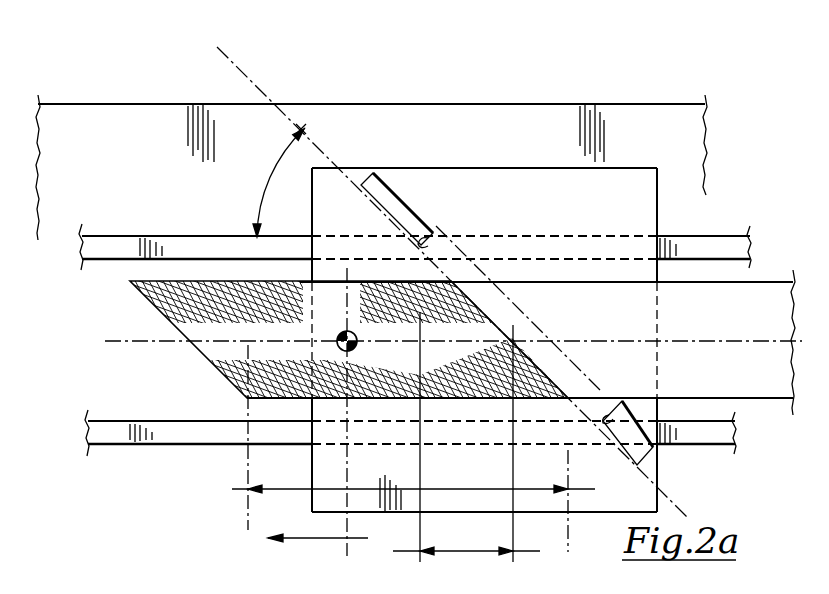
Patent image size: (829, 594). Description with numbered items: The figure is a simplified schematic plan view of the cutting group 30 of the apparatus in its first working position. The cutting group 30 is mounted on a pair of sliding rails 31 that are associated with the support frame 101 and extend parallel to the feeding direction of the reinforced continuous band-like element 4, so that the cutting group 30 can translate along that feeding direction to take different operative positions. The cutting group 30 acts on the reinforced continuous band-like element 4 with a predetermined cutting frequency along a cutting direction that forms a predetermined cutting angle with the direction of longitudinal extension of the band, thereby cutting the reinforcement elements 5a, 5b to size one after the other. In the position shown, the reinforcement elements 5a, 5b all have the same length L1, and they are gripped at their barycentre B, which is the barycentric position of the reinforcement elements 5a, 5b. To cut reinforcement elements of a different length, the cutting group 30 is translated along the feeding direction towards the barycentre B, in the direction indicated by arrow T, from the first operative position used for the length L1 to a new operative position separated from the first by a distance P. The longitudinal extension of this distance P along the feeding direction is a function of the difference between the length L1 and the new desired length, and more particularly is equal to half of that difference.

The support frame 101 is at (103, 130).
The cutting group 30 is at (485, 180).
The sliding rails 31 is at (188, 250).
The reinforced continuous band-like element 4 is at (755, 300).
The reinforcement element 5a is at (347, 338).
The reinforcement element 5b is at (237, 360).
The barycentre B is at (360, 334).
The length of the reinforcement elements L1 is at (405, 490).
The distance between operative positions P is at (466, 539).
The translation direction arrow T is at (318, 538).